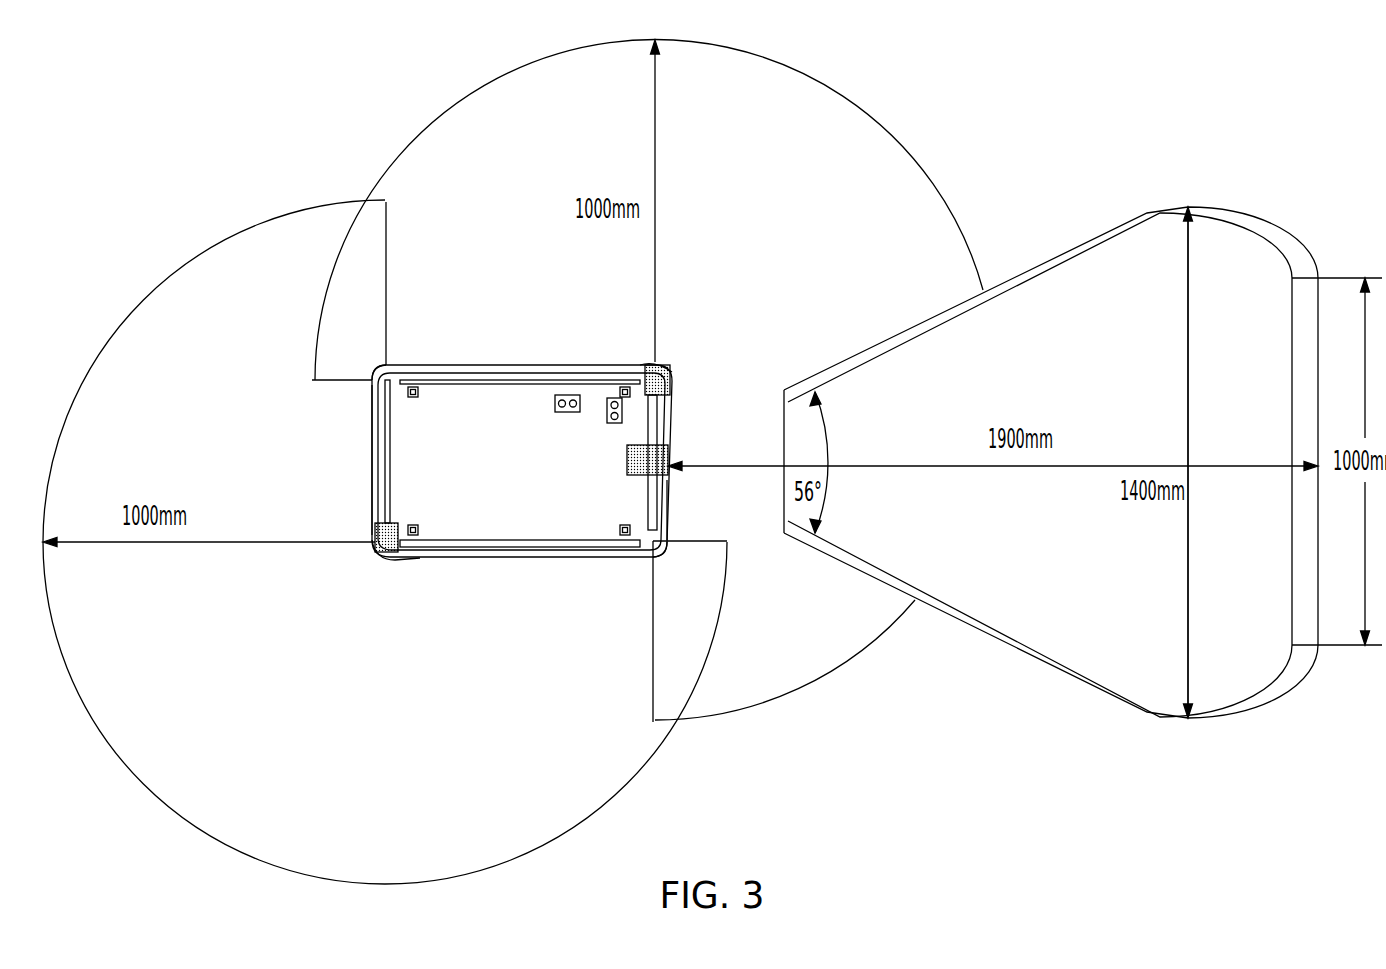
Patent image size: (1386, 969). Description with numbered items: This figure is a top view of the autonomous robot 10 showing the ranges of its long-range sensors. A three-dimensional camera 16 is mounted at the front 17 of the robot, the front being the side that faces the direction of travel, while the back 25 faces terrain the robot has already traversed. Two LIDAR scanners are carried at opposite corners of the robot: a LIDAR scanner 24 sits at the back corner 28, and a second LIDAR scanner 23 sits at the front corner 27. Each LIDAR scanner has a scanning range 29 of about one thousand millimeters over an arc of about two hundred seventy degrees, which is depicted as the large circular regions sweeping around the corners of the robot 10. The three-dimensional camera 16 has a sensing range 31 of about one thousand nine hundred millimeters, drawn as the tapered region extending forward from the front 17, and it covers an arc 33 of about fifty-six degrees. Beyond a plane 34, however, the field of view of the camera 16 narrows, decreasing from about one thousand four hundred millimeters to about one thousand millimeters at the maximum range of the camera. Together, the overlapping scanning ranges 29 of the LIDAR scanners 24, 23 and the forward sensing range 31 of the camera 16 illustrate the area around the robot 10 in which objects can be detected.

The robot 10 is at (507, 473).
The 3D camera 16 is at (652, 457).
The front 17 is at (672, 500).
The LIDAR scanner 23 is at (650, 366).
The LIDAR scanner 24 is at (385, 535).
The back 25 is at (370, 428).
The front corner 27 is at (672, 370).
The back corner 28 is at (398, 565).
The scanning range 29 is at (898, 163).
The sensing range 31 is at (1078, 270).
The arc 33 is at (828, 490).
The plane 34 is at (1188, 348).